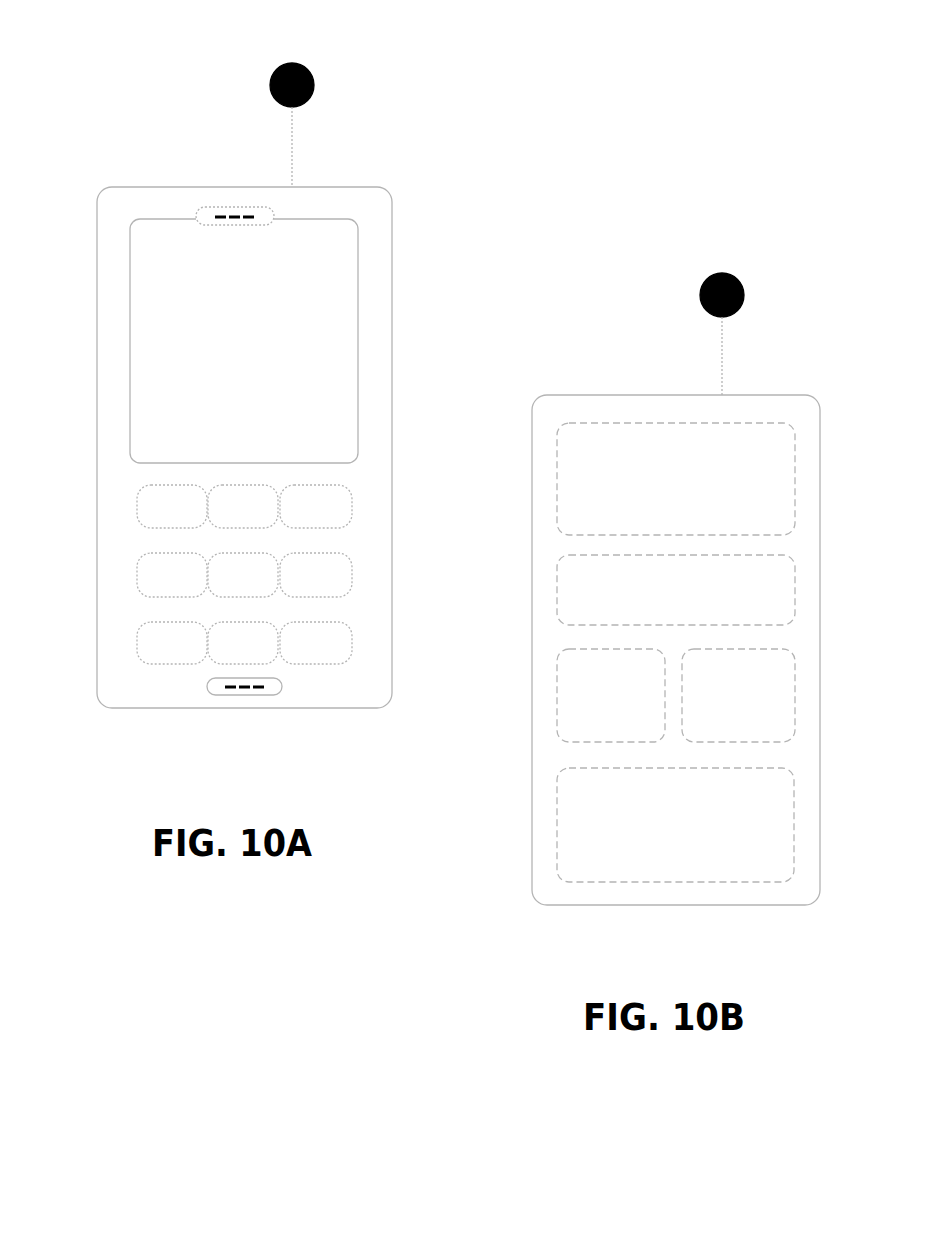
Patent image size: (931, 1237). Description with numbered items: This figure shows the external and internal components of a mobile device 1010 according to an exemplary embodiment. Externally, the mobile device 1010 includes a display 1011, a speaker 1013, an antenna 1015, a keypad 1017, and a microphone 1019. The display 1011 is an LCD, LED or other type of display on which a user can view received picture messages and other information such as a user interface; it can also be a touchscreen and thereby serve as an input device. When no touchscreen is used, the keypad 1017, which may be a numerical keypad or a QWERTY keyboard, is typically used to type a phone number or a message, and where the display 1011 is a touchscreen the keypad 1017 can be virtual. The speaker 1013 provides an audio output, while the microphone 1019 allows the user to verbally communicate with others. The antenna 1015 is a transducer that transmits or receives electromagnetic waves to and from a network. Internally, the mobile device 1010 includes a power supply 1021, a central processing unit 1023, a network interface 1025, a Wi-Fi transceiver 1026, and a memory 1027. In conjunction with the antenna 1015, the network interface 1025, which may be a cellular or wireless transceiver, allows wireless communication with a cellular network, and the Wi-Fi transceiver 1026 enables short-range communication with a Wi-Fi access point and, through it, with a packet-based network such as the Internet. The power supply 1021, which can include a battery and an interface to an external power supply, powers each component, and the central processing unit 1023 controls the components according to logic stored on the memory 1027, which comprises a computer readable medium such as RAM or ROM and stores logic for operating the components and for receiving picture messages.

In FIG. 10A, the mobile device 1010 is at (342, 187).
In FIG. 10A, the display 1011 is at (157, 219).
In FIG. 10A, the speaker 1013 is at (248, 207).
In FIG. 10A, the antenna 1015 is at (313, 73).
In FIG. 10A, the keypad 1017 is at (137, 486).
In FIG. 10A, the microphone 1019 is at (262, 690).
In FIG. 10B, the power supply 1021 is at (557, 453).
In FIG. 10B, the central processing unit 1023 is at (557, 572).
In FIG. 10B, the network interface 1025 is at (557, 682).
In FIG. 10B, the Wi-Fi transceiver 1026 is at (785, 652).
In FIG. 10B, the memory 1027 is at (557, 790).